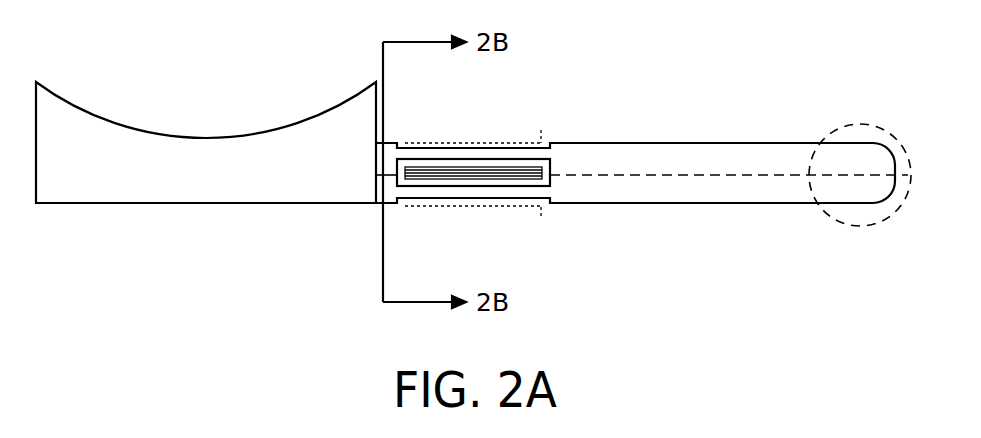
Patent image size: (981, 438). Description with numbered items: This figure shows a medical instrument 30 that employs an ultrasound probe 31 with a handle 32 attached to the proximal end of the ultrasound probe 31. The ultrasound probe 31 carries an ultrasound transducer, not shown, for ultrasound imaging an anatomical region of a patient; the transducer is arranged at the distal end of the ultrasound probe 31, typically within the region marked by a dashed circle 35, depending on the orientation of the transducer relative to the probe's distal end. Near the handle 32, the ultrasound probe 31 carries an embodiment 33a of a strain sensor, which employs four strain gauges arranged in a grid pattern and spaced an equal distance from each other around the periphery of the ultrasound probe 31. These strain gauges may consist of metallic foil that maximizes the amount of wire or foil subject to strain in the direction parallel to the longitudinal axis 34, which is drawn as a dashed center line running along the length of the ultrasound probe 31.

The medical instrument 30 is at (763, 92).
The ultrasound probe 31 is at (668, 143).
The handle 32 is at (197, 138).
The strain sensor embodiment 33a is at (512, 130).
The longitudinal axis 34 is at (705, 180).
The dashed circle 35 is at (858, 122).